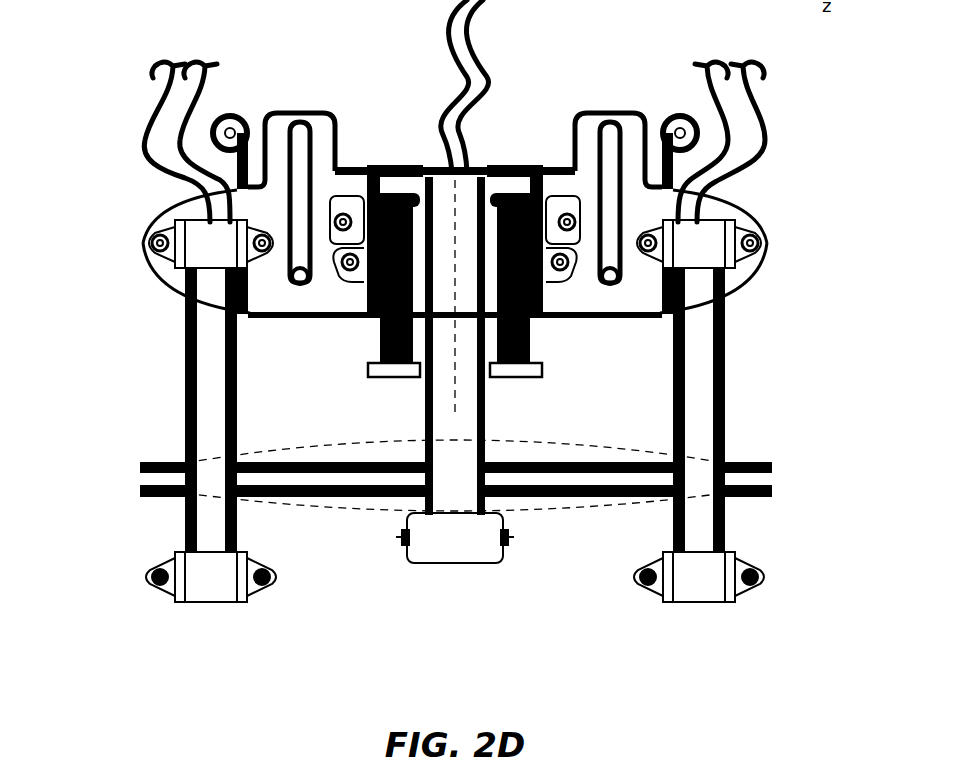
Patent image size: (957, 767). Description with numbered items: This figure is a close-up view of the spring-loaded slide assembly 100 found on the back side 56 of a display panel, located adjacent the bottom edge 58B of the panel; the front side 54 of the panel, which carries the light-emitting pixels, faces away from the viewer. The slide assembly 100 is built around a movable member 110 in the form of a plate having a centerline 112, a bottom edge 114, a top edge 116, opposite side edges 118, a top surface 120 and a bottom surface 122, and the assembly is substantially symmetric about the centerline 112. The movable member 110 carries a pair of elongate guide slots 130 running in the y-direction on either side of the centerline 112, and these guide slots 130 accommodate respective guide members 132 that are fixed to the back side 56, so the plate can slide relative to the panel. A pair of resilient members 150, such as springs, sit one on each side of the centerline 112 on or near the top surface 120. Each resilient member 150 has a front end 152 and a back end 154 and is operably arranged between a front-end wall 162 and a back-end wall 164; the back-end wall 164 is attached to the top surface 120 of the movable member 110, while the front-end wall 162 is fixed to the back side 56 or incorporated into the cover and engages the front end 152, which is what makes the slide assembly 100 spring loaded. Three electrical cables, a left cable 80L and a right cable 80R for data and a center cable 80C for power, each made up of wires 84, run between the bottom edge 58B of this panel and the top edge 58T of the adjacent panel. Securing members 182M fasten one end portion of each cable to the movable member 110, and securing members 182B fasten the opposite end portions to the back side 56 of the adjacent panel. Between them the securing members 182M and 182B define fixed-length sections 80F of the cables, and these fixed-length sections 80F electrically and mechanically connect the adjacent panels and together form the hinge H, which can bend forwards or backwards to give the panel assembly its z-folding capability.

The slide assembly 100 is at (302, 52).
The wires 84 is at (163, 104).
The back side 56 is at (562, 31).
The bottom surface 122 is at (320, 123).
The elongate guide slots 130 is at (312, 140).
The back-end wall 164 is at (343, 195).
The back end 154 is at (428, 203).
The top edge 116 is at (622, 112).
The side edges 118 is at (150, 232).
The movable member 110 is at (133, 258).
The securing members 182M is at (183, 286).
The bottom edge 114 is at (188, 287).
The right electrical cable 80R is at (200, 368).
The guide members 132 is at (300, 287).
The resilient members 150 is at (385, 330).
The front end 152 is at (370, 365).
The front-end wall 162 is at (393, 378).
The center electrical cable 80C is at (425, 432).
The centerline 112 is at (457, 400).
The top surface 120 is at (742, 272).
The left electrical cable 80L is at (712, 362).
The front side 54 is at (762, 380).
The fixed-length sections 80F is at (756, 428).
The bottom edge 58B is at (140, 478).
The top edge 58T is at (770, 482).
The securing members 182B is at (203, 583).
The hinge H is at (275, 508).